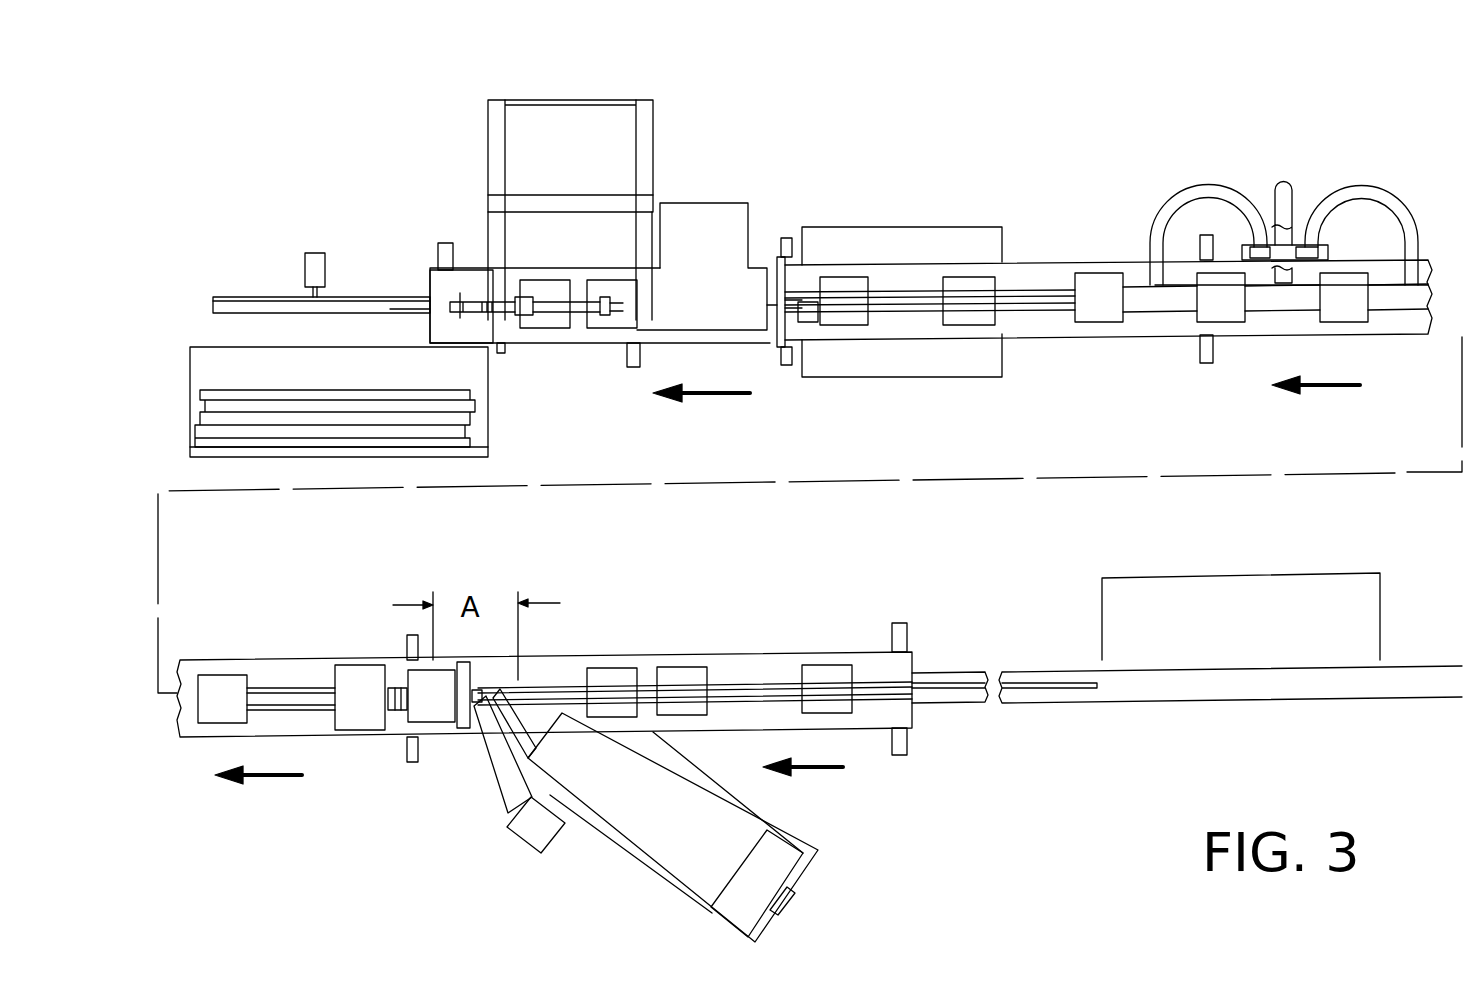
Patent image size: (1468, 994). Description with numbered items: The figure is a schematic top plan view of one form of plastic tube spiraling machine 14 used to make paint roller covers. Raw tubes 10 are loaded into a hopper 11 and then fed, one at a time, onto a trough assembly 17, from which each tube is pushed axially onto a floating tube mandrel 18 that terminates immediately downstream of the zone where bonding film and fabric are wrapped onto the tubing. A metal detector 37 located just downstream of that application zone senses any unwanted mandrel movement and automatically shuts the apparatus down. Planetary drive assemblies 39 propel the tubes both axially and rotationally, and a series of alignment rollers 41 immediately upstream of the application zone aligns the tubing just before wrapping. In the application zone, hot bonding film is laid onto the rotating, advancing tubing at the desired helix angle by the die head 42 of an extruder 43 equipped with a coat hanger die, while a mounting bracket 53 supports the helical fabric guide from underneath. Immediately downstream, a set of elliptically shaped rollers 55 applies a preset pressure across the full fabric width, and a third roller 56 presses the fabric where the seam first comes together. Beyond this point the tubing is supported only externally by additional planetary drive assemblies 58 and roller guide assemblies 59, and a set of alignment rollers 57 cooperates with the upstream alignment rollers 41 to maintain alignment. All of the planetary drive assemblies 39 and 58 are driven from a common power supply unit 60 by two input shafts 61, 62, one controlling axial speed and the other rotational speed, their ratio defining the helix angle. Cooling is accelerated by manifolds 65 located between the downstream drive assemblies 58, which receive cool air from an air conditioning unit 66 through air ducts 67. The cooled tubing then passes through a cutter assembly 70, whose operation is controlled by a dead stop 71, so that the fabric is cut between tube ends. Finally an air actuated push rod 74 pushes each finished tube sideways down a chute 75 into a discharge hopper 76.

The tube 10 is at (371, 443).
The hopper 11 is at (1383, 606).
The plastic tube spiraling machine 14 is at (855, 792).
The trough assembly 17 is at (1350, 700).
The floating tube mandrel 18 is at (967, 710).
The metal detector 37 is at (398, 712).
The planetary drive assembly 39 is at (610, 672).
The alignment rollers 41 is at (538, 688).
The die head 42 is at (497, 712).
The extruder 43 is at (640, 857).
The mounting bracket 53 is at (519, 712).
The elliptically shaped rollers 55 is at (463, 730).
The third roller 56 is at (476, 690).
The alignment rollers 57 is at (348, 672).
The planetary drive assembly 58 is at (605, 278).
The roller guide assembly 59 is at (501, 353).
The power supply unit 60 is at (908, 231).
The input shaft 61 is at (900, 318).
The input shaft 62 is at (920, 293).
The manifold 65 is at (1155, 306).
The air conditioning unit 66 is at (1268, 250).
The air duct 67 is at (1197, 188).
The cutter assembly 70 is at (714, 206).
The dead stop 71 is at (440, 290).
The push rod 74 is at (304, 292).
The chute 75 is at (200, 366).
The discharge hopper 76 is at (491, 425).